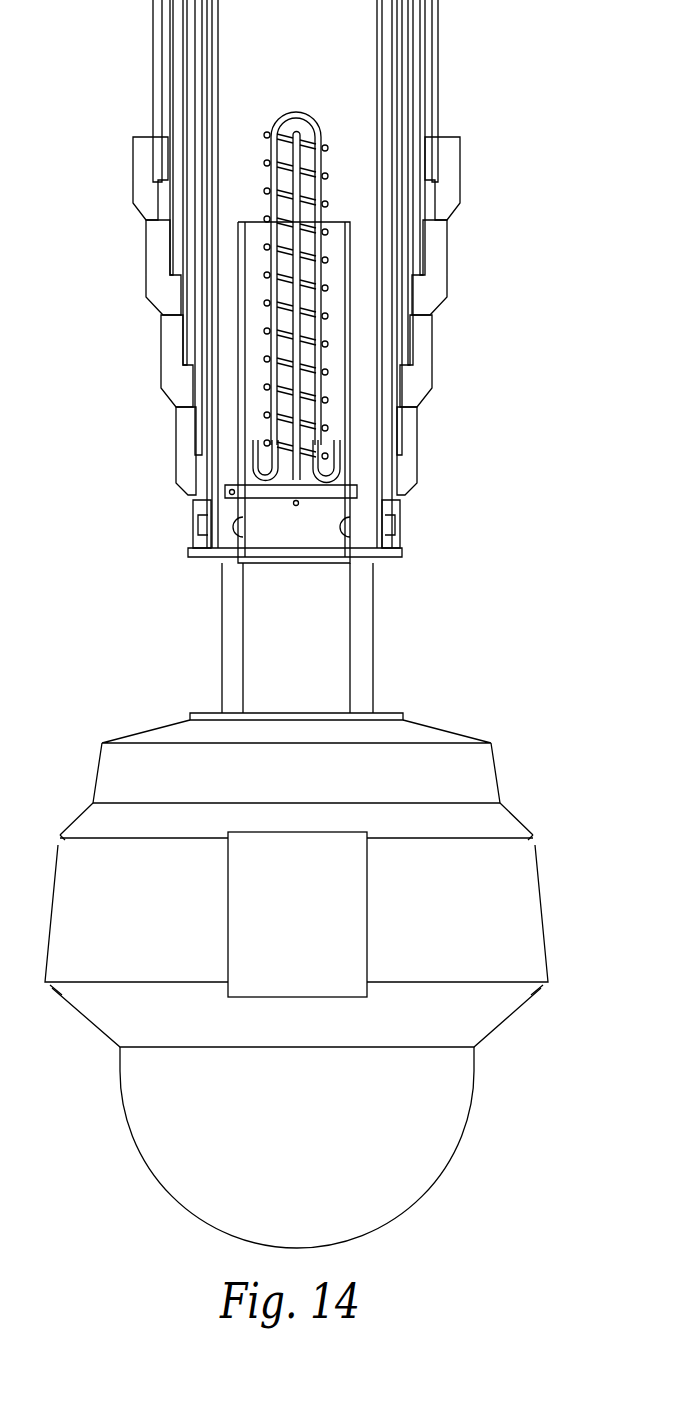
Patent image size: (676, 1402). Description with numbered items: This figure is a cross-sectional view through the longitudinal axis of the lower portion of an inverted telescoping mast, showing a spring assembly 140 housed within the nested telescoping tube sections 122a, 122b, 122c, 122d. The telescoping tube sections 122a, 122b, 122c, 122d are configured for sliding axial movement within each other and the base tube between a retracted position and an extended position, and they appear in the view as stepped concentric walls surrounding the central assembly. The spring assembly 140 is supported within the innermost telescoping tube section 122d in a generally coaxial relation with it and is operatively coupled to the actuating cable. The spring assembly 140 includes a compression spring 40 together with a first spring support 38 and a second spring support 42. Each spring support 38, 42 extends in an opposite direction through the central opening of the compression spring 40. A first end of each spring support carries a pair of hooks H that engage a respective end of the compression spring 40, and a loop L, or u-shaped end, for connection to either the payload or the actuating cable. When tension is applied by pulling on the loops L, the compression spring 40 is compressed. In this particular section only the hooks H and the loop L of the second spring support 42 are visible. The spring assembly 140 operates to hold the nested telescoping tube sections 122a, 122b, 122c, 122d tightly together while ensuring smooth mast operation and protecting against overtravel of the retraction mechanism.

The spring assembly 140 is at (333, 125).
The telescoping tube section 122a is at (450, 156).
The telescoping tube section 122b is at (435, 255).
The telescoping tube section 122c is at (418, 347).
The telescoping tube section 122d is at (407, 442).
The loop L is at (270, 281).
The compression spring 40 is at (271, 186).
The second spring support 42 is at (297, 312).
The first spring support 38 is at (262, 500).
The hooks H is at (253, 452).